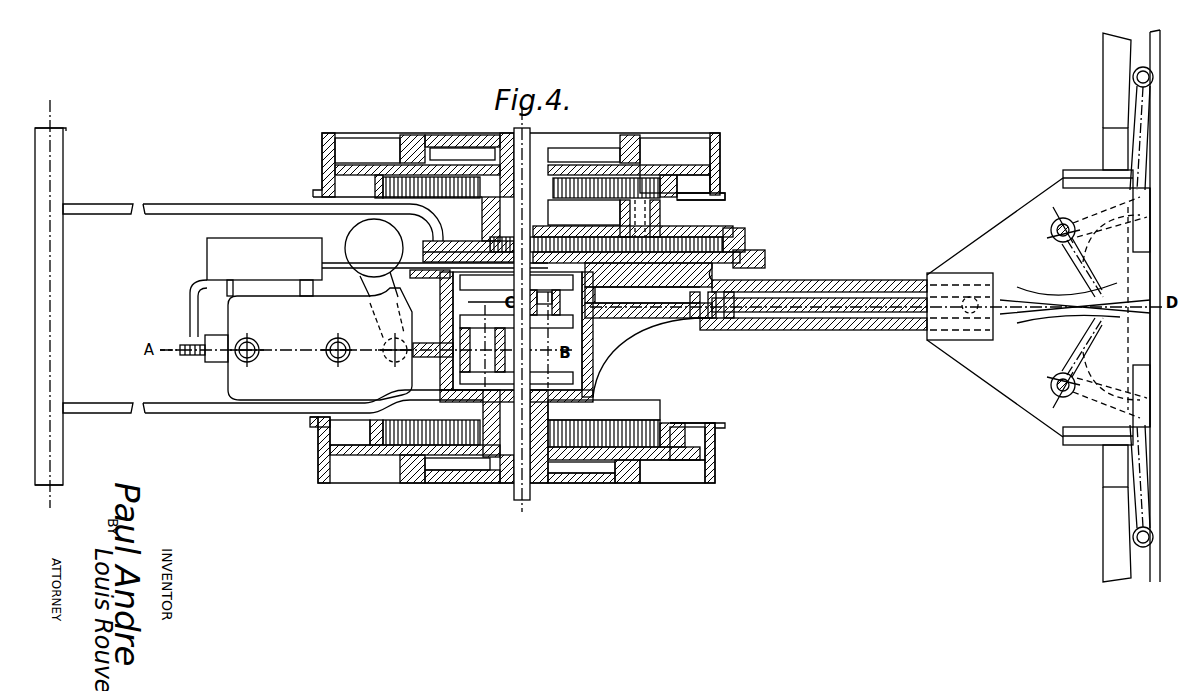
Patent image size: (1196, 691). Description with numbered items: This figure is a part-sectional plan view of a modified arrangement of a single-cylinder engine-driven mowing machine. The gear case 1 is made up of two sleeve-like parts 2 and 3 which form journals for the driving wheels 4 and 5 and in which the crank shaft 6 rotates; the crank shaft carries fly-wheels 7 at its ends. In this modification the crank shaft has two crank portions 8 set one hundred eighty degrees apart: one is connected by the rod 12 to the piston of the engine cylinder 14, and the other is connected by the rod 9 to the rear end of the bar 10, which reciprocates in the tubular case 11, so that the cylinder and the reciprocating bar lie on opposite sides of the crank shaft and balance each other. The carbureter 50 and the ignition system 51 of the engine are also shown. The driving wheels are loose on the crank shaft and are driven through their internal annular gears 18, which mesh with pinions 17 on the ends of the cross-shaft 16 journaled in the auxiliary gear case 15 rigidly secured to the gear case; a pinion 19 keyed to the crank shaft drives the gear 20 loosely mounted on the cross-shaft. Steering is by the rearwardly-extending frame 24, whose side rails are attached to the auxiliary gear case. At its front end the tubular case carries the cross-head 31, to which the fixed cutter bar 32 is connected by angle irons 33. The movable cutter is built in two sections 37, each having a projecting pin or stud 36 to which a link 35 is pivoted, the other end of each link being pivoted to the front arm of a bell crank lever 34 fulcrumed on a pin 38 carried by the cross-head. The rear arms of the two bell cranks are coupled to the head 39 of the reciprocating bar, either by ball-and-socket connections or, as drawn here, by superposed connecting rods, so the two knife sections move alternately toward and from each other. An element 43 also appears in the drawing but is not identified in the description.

The gear case 1 is at (594, 396).
The sleeve-like part 2 is at (490, 222).
The sleeve-like part 3 is at (553, 412).
The driving wheel 4 is at (712, 181).
The driving wheel 5 is at (716, 468).
The crank shaft 6 is at (584, 212).
The fly-wheels 7 is at (423, 138).
The crank portion 8 is at (520, 344).
The rod 9 is at (668, 320).
The bar 10 is at (835, 312).
The tubular case 11 is at (850, 285).
The rod 12 is at (433, 331).
The engine cylinder 14 is at (270, 384).
The auxiliary gear case 15 is at (735, 228).
The cross-shaft 16 is at (660, 216).
The pinions 17 is at (650, 177).
The internal annular gears 18 is at (450, 198).
The pinion 19 is at (518, 310).
The gear 20 is at (765, 252).
The frame 24 is at (63, 287).
The cross-head 31 is at (1038, 307).
The bar 32 is at (1105, 87).
The angle irons 33 is at (1095, 175).
The bell crank lever 34 is at (1080, 270).
The link 35 is at (1140, 135).
The pin or stud 36 is at (1155, 77).
The sections of movable knife bar 37 is at (1162, 50).
The pin 38 is at (1073, 222).
The head 39 is at (1090, 303).
The bolt 43 is at (544, 295).
The carbureter 50 is at (355, 240).
The ignition system 51 is at (266, 243).